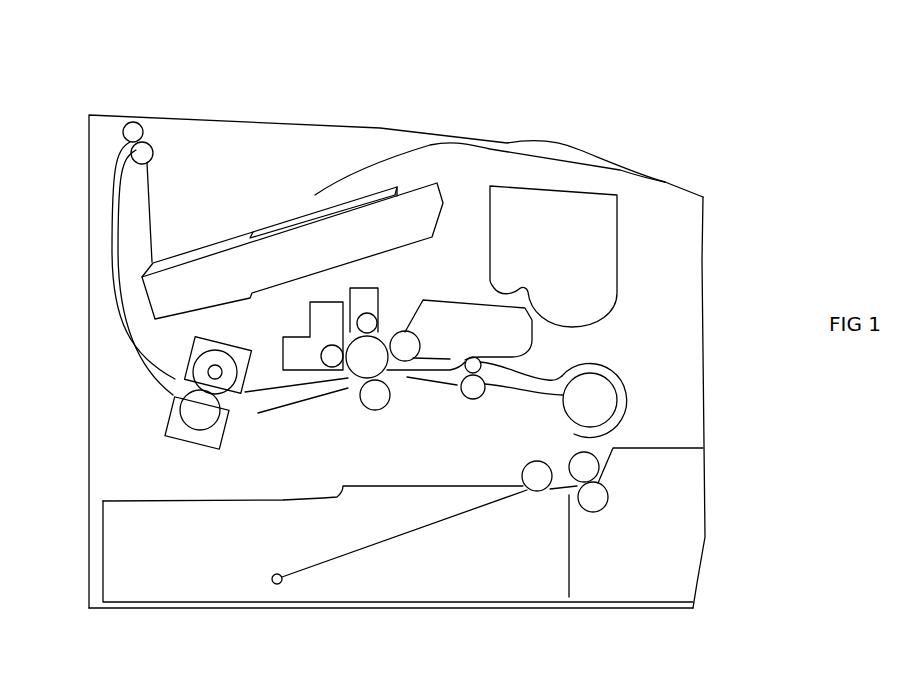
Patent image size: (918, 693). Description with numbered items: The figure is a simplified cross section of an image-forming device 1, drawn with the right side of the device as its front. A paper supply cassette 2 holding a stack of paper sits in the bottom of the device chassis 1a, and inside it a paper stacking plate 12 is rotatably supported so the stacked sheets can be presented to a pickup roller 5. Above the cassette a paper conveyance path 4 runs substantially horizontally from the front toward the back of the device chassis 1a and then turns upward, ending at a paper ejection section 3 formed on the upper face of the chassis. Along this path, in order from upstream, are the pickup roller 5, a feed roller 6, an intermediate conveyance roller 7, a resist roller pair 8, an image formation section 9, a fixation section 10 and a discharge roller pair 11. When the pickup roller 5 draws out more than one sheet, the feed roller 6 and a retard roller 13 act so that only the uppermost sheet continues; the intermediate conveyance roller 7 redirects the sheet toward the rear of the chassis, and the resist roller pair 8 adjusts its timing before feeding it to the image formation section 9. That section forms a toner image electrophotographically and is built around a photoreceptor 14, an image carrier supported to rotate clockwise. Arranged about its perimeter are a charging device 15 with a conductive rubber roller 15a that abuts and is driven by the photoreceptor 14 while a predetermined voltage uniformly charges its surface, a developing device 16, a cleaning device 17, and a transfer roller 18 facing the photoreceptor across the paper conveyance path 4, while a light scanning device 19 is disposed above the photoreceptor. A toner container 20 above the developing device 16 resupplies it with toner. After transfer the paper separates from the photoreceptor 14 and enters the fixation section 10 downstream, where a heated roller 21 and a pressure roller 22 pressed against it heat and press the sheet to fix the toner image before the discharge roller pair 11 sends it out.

The image-forming device 1 is at (586, 118).
The device chassis 1a is at (705, 308).
The paper supply cassette 2 is at (710, 531).
The paper ejection section 3 is at (248, 222).
The paper conveyance path 4 is at (118, 320).
The pickup roller 5 is at (537, 478).
The feed roller 6 is at (584, 467).
The intermediate conveyance roller 7 is at (590, 400).
The resist roller pair 8 is at (493, 392).
The image formation section 9 is at (368, 414).
The fixation section 10 is at (162, 406).
The discharge roller pair 11 is at (148, 130).
The paper stacking plate 12 is at (393, 542).
The retard roller 13 is at (593, 497).
The photoreceptor 14 is at (367, 357).
The charging device 15 is at (368, 298).
The conductive rubber roller 15a is at (370, 318).
The developing device 16 is at (460, 303).
The cleaning device 17 is at (308, 357).
The transfer roller 18 is at (377, 394).
The light scanning device 19 is at (335, 248).
The toner container 20 is at (575, 258).
The heated roller 21 is at (208, 368).
The pressure roller 22 is at (198, 413).